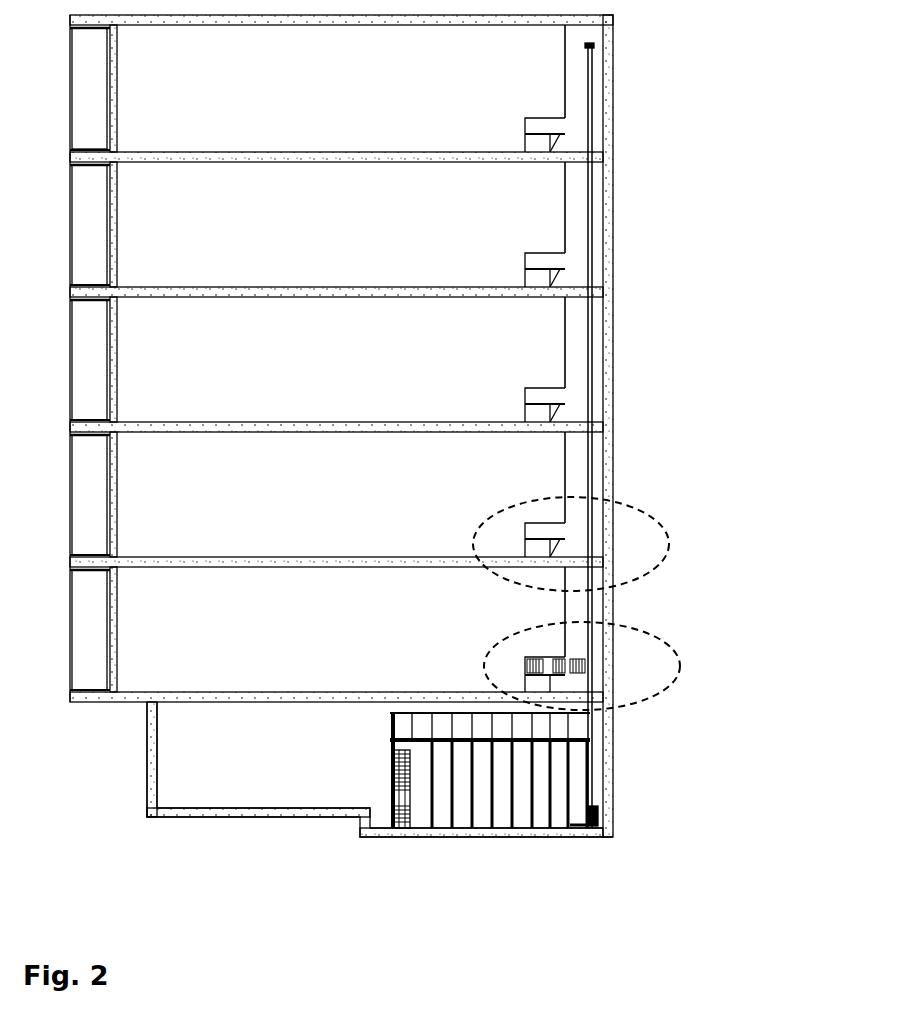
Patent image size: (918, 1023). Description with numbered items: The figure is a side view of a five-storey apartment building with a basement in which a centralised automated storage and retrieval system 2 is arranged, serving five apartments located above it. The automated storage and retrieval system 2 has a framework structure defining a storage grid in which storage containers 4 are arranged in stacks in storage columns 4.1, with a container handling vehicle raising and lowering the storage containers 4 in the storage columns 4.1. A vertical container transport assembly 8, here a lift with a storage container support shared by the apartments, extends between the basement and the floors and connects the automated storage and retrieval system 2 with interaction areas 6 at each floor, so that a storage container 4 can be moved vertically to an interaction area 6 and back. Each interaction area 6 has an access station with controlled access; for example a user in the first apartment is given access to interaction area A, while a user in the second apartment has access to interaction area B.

The centralised automated storage and retrieval system 2 is at (614, 772).
The storage container 4 is at (519, 668).
The storage column 4.1 is at (390, 760).
The interaction area 6 is at (568, 661).
The vertical container transport assembly 8 is at (596, 80).
The interaction area A is at (596, 666).
The interaction area B is at (583, 544).